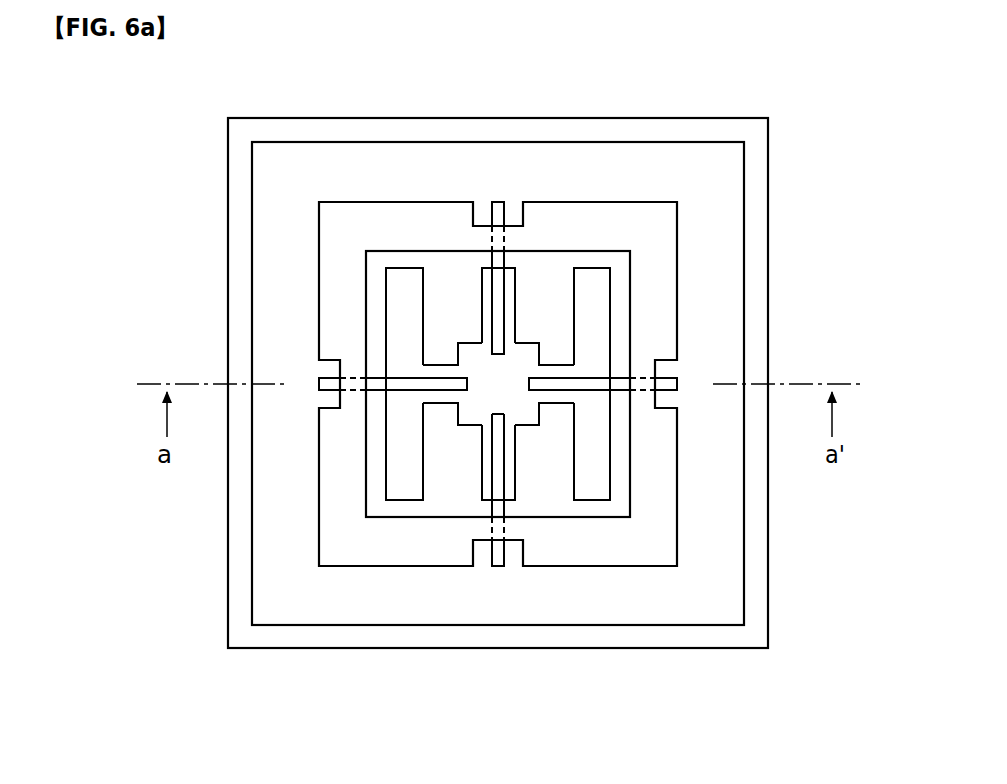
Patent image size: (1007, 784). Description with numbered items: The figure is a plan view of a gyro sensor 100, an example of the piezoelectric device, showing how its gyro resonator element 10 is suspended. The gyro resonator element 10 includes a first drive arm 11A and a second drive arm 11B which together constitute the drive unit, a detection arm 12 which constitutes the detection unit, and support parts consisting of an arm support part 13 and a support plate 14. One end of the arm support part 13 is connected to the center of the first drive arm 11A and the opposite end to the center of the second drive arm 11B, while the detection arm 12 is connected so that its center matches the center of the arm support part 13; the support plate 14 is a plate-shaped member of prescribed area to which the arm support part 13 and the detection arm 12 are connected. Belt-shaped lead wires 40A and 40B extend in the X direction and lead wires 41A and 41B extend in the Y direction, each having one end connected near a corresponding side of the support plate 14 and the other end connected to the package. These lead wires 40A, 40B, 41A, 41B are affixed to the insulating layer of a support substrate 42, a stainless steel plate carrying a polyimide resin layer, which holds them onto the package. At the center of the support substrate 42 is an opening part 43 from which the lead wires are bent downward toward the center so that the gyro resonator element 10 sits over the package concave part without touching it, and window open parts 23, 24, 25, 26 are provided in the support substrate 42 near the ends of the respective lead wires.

The gyro sensor 100 is at (777, 175).
The gyro resonator element 10 is at (616, 489).
The first drive arm 11A is at (405, 279).
The second drive arm 11B is at (592, 280).
The detection arm 12 is at (488, 312).
The arm support part 13 is at (442, 396).
The support plate 14 is at (470, 412).
The window open part 23 is at (328, 398).
The window open part 24 is at (511, 553).
The window open part 25 is at (667, 370).
The window open part 26 is at (484, 213).
The lead wire 40A is at (328, 380).
The lead wire 40B is at (667, 382).
The lead wire 41A is at (497, 206).
The lead wire 41B is at (498, 553).
The support substrate 42 is at (652, 232).
The opening part 43 is at (548, 445).